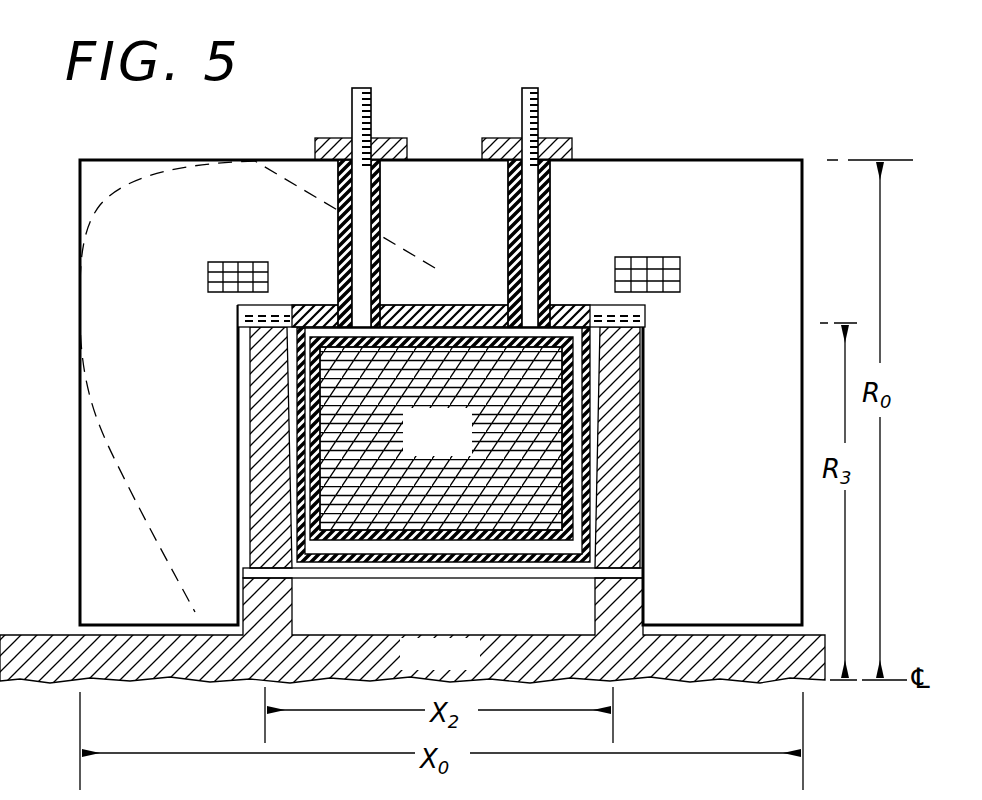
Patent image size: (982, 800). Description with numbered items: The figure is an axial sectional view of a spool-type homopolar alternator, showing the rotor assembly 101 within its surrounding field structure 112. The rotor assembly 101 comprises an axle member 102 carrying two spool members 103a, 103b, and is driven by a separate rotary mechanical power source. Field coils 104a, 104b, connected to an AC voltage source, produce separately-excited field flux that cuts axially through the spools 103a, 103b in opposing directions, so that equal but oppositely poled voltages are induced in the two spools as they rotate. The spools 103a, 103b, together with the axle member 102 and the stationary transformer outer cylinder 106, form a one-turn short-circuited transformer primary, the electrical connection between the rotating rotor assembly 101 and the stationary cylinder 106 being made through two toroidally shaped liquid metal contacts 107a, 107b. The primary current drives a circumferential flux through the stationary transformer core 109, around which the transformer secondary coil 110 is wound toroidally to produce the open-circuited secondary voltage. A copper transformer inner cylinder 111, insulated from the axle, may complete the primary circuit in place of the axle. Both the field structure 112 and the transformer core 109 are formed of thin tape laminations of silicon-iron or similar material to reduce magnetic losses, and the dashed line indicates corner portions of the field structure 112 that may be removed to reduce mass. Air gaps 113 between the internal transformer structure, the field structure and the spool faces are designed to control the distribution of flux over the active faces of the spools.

The rotor assembly 101 is at (44, 634).
The axle member 102 is at (412, 630).
The spool member 103a is at (266, 457).
The spool member 103b is at (754, 426).
The field coil 104a is at (227, 234).
The field coil 104b is at (754, 234).
The stationary transformer outer cylinder 106 is at (452, 303).
The liquid metal contact 107a is at (240, 323).
The liquid metal contact 107b is at (760, 328).
The transformer core 109 is at (441, 438).
The transformer secondary coil 110 is at (522, 100).
The transformer inner cylinder 111 is at (620, 568).
The field structure 112 is at (678, 168).
The air gaps 113 is at (646, 378).